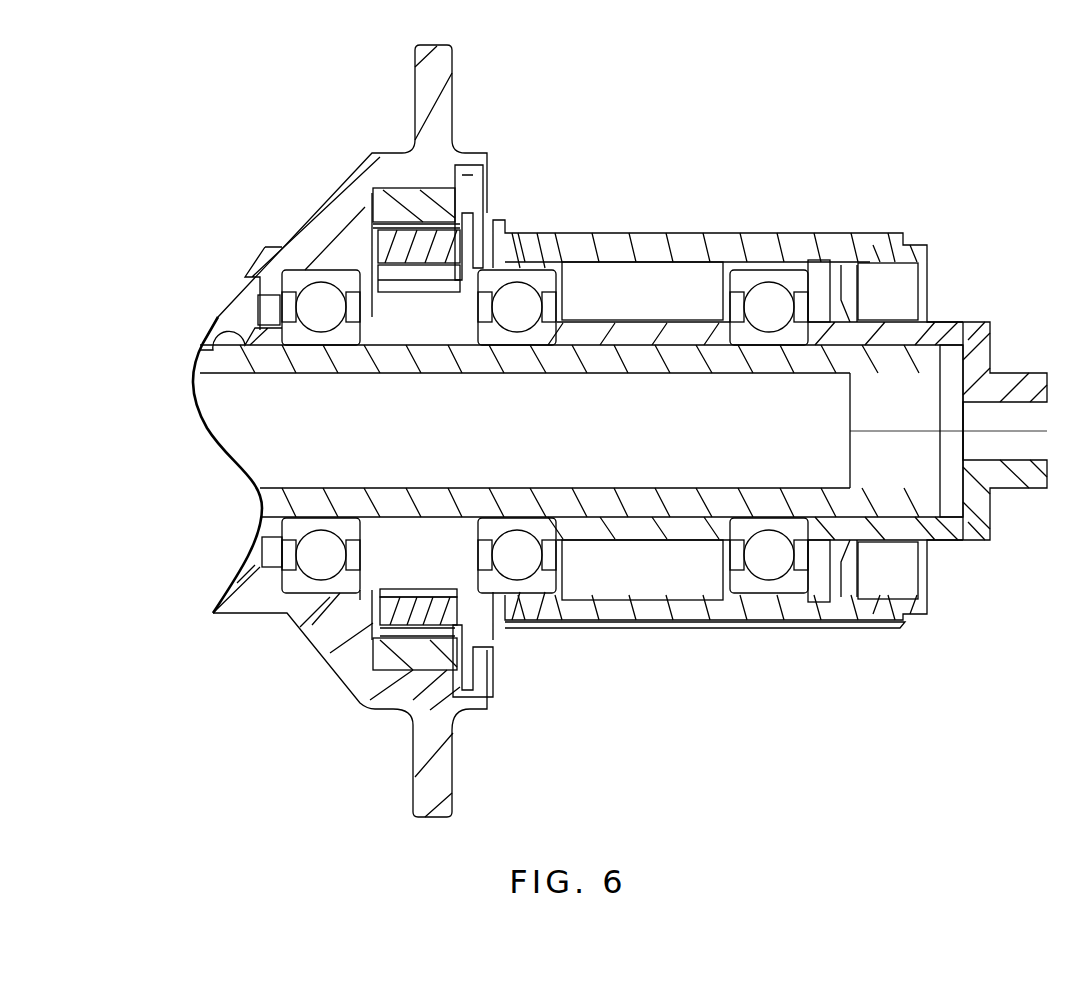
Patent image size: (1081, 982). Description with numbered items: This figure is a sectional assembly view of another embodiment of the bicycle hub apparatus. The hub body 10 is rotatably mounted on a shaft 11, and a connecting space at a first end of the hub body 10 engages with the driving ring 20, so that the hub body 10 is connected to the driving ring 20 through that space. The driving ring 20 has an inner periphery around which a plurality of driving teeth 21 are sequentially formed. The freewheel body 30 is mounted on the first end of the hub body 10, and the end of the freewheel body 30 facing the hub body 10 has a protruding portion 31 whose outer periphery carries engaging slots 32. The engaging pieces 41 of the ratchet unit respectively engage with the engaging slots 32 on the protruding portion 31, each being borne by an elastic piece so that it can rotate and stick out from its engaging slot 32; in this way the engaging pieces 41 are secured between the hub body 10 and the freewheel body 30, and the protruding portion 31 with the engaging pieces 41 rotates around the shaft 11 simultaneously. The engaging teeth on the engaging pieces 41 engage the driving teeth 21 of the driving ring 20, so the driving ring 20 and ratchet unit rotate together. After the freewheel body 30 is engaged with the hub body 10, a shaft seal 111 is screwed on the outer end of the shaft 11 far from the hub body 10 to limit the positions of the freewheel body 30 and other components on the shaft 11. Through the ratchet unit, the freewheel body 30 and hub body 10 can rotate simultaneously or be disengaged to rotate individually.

The hub body 10 is at (346, 138).
The shaft 11 is at (633, 353).
The shaft seal 111 is at (947, 337).
The driving ring 20 is at (370, 203).
The driving teeth 21 is at (375, 224).
The freewheel body 30 is at (803, 216).
The protruding portion 31 is at (393, 290).
The engaging slots 32 is at (407, 272).
The engaging pieces 41 is at (447, 247).